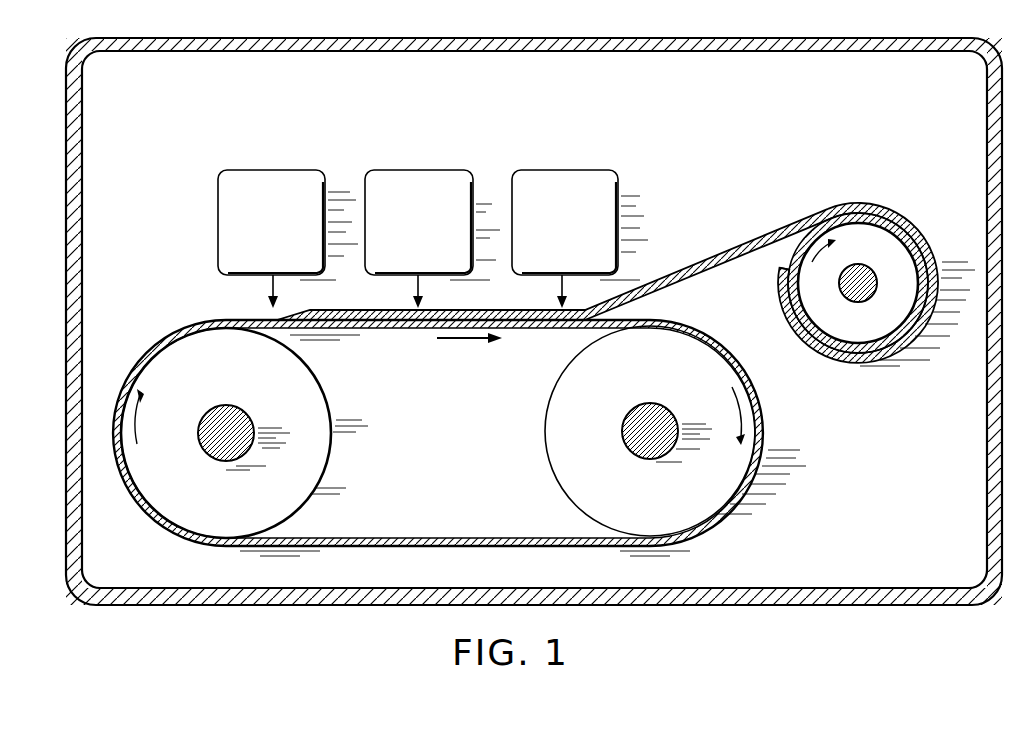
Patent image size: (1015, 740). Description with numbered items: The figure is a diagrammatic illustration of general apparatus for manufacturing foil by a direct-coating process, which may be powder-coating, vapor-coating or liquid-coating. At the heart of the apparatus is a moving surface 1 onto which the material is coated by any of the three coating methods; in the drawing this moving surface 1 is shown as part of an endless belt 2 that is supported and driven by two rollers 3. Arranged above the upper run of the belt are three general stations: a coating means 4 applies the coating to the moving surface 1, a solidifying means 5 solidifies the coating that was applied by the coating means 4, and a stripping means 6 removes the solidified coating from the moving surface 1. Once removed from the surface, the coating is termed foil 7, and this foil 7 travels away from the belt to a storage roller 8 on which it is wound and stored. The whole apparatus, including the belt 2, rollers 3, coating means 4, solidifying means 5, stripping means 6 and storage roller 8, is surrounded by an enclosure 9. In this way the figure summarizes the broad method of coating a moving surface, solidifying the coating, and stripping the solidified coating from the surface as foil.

The moving surface 1 is at (548, 328).
The endless belt 2 is at (756, 386).
The rollers 3 is at (318, 464).
The coating means 4 is at (270, 233).
The solidifying means 5 is at (423, 233).
The stripping means 6 is at (567, 233).
The foil 7 is at (710, 258).
The storage roller 8 is at (873, 238).
The enclosure 9 is at (686, 40).